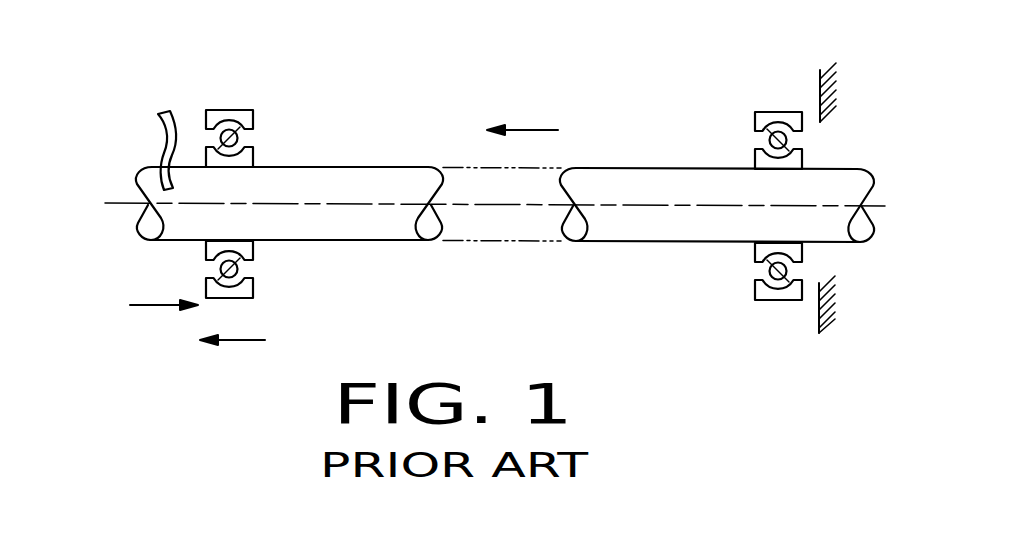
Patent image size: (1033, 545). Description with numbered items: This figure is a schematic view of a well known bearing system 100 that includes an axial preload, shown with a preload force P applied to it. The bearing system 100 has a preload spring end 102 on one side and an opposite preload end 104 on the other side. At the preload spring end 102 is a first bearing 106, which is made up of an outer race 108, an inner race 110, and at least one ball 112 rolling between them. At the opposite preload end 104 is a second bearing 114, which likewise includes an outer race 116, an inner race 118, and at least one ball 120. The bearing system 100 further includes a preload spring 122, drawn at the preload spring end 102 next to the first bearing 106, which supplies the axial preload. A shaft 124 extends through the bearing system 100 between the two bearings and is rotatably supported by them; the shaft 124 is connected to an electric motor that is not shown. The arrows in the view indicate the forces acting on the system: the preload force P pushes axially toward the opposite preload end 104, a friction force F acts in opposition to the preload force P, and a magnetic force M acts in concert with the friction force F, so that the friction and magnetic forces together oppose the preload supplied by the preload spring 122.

The bearing system 100 is at (437, 135).
The preload spring end 102 is at (143, 151).
The opposite preload end 104 is at (835, 140).
The first bearing 106 is at (248, 98).
The outer race 108 is at (217, 112).
The inner race 110 is at (243, 157).
The ball 112 is at (217, 128).
The second bearing 114 is at (783, 102).
The outer race 116 is at (760, 130).
The inner race 118 is at (760, 162).
The ball 120 is at (766, 133).
The preload spring 122 is at (160, 112).
The shaft 124 is at (680, 223).